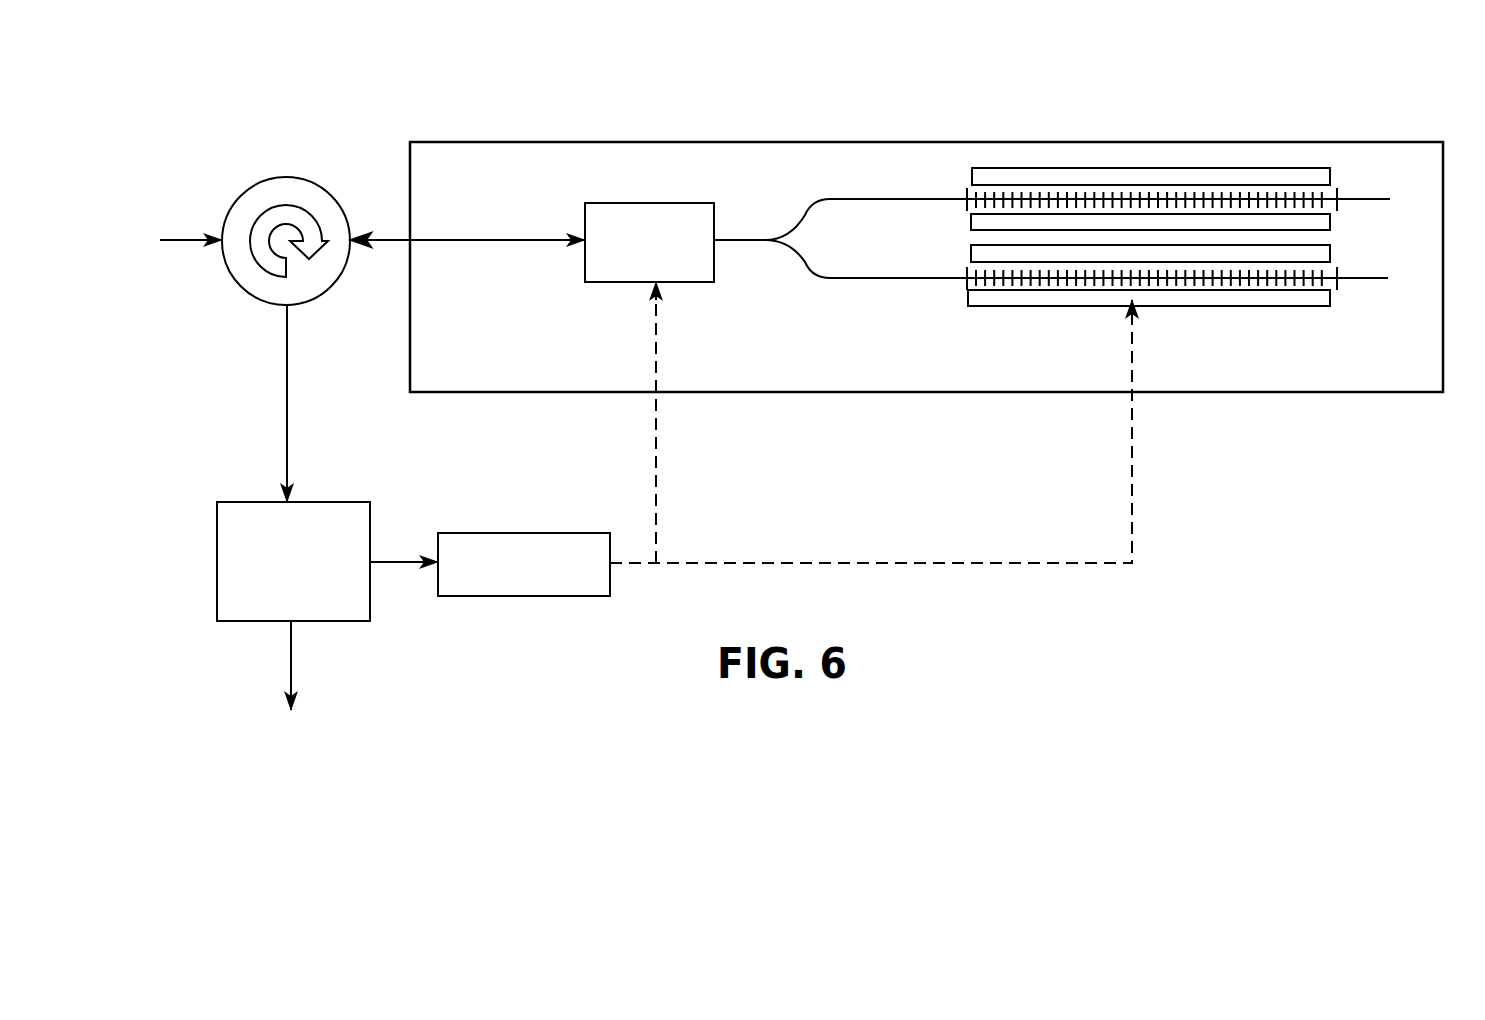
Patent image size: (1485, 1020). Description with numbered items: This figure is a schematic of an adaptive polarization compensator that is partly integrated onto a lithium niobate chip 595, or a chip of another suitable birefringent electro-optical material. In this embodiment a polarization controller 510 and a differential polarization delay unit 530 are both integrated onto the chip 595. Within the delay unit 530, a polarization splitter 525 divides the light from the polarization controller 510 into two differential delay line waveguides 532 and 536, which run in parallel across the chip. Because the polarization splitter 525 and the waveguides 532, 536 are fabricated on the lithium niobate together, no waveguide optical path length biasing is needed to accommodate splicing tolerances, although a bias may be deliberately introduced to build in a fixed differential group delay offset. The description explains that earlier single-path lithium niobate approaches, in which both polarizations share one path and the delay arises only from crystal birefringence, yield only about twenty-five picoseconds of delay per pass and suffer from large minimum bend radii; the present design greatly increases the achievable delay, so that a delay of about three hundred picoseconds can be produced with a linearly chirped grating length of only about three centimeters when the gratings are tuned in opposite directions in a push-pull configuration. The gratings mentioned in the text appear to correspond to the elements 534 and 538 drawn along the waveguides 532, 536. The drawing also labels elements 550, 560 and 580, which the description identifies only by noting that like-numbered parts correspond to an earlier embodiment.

The polarization controller 510 is at (672, 256).
The polarization splitter 525 is at (766, 237).
The differential polarization delay unit 530 is at (1416, 117).
The differential delay line waveguide 532 is at (1342, 197).
The first fiber Bragg grating 534 is at (965, 192).
The differential delay line waveguide 536 is at (1340, 281).
The second fiber Bragg grating 538 is at (965, 270).
The optical circulator / detector 550 is at (281, 176).
The controller 560 is at (539, 580).
The tuning plates 580 is at (1330, 216).
The chip 595 is at (1386, 374).